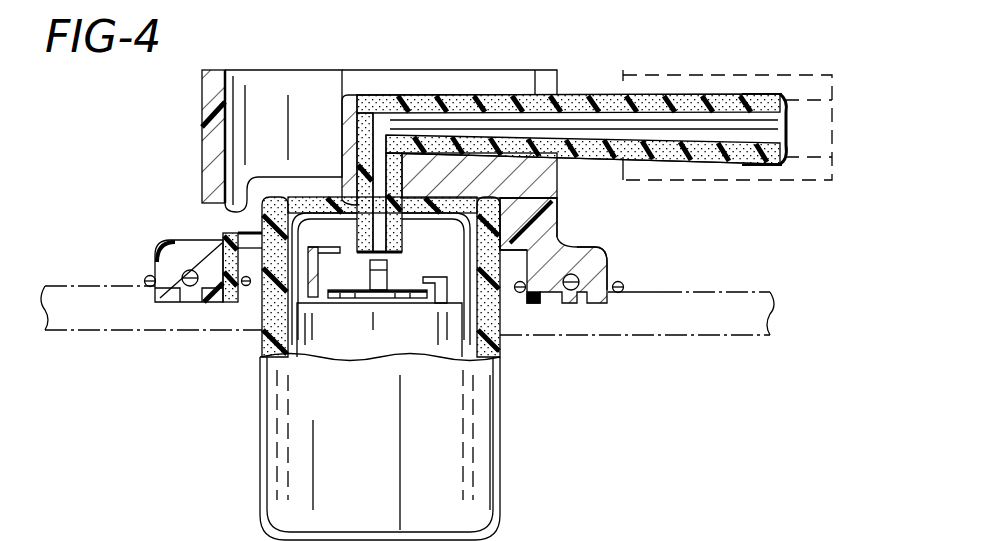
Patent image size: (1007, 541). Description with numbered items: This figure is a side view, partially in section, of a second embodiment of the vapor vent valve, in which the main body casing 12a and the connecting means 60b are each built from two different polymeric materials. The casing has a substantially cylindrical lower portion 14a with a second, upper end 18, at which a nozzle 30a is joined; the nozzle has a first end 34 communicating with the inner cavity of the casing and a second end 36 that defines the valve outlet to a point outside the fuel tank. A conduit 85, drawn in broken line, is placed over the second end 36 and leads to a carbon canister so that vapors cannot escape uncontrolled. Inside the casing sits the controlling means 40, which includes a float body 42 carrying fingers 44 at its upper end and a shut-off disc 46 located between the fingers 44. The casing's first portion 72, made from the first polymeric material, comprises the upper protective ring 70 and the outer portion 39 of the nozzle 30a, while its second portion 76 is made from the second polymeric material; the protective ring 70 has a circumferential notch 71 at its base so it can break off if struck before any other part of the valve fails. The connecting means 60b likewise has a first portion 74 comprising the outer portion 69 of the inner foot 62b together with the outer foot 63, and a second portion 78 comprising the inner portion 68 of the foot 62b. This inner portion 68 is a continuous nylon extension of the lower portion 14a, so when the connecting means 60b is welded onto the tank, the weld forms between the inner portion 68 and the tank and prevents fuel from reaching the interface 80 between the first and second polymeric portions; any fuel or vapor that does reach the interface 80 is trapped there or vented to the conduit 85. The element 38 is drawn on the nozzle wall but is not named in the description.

The main body casing 12a is at (270, 388).
The lower portion 14a is at (285, 434).
The second, upper end 18 is at (263, 177).
The nozzle 30a is at (606, 107).
The first end 34 is at (348, 192).
The second end 36 is at (774, 97).
The upper arm wall 38 is at (568, 103).
The outer portion of the nozzle 39 is at (584, 103).
The controlling means 40 is at (384, 322).
The float body 42 is at (420, 342).
The fingers 44 is at (313, 268).
The shut-off element or disc 46 is at (338, 300).
The connecting means 60b is at (142, 268).
The inner foot 62b is at (556, 312).
The outer foot 63 is at (596, 291).
The inner portion 68 is at (531, 305).
The outer portion 69 is at (213, 304).
The protective ring 70 is at (208, 102).
The circumferential notch 71 is at (214, 231).
The first portion 72 is at (568, 192).
The first portion 74 is at (598, 240).
The second portion 76 is at (256, 371).
The second portion 78 is at (232, 309).
The interface 80 is at (370, 96).
The conduit 85 is at (803, 183).